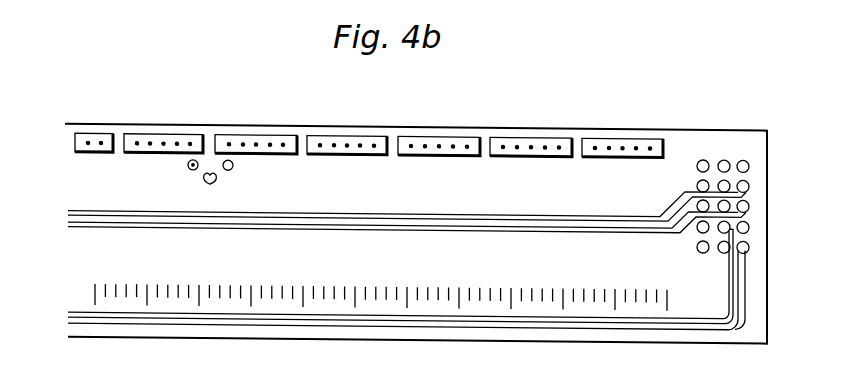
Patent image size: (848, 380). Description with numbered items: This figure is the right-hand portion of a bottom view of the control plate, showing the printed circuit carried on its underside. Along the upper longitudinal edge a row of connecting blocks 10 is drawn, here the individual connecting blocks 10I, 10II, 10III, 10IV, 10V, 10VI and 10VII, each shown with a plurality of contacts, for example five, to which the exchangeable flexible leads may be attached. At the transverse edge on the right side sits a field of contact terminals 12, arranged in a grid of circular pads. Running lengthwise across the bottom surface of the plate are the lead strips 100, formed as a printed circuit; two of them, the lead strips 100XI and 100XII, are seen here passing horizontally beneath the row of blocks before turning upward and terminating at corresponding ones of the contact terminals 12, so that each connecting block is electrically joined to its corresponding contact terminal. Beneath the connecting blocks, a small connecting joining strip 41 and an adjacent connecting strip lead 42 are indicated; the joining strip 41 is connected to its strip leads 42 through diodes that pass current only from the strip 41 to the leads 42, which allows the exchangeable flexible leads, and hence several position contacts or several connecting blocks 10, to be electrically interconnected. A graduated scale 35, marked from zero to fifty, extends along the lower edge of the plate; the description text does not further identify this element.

The connecting blocks 10 is at (369, 122).
The connecting block 10I is at (618, 132).
The connecting block 10II is at (517, 132).
The connecting block 10III is at (435, 132).
The connecting block 10IV is at (342, 132).
The connecting block 10V is at (235, 132).
The connecting block 10VI is at (173, 132).
The connecting block 10VII is at (93, 132).
The contact terminals 12 is at (696, 238).
The measuring scale 35 is at (368, 284).
The connecting joining strip 41 is at (220, 181).
The connecting strip lead 42 is at (188, 165).
The lead strips 100 is at (407, 232).
The lead strip 100XI is at (217, 216).
The lead strip 100XII is at (136, 228).